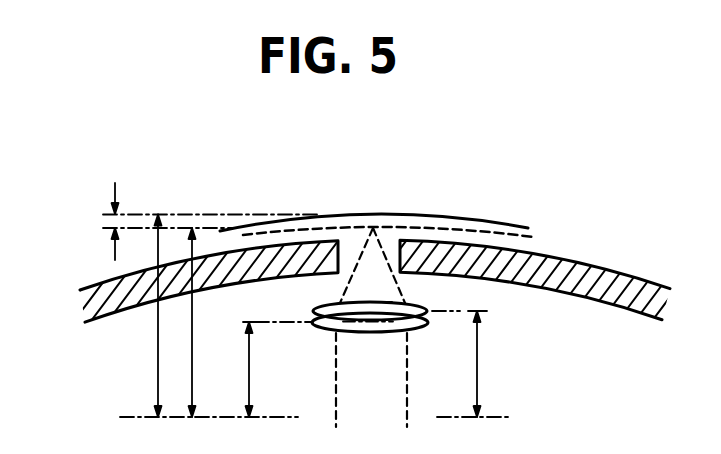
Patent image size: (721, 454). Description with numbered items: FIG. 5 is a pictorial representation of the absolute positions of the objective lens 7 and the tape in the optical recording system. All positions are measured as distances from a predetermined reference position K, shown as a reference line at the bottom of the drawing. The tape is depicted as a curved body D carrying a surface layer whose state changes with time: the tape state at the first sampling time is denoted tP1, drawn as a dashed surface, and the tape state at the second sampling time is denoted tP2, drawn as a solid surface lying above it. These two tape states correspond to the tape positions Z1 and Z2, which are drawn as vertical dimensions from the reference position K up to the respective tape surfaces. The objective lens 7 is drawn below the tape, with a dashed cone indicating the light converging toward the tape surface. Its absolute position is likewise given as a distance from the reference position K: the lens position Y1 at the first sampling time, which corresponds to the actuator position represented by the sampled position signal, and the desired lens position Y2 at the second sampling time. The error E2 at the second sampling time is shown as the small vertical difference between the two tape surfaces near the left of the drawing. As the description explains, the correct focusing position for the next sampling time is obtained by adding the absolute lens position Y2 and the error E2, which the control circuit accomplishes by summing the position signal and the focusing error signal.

The optical disk substrate D is at (627, 309).
The objective lens 7 is at (368, 333).
The tape state at time T2 tP2 is at (528, 228).
The tape state at time T1 tP1 is at (533, 237).
The error at time T2 E2 is at (112, 222).
The tape position at time T2 Z2 is at (156, 316).
The tape position at time T1 Z1 is at (196, 322).
The desired lens position at time T2 Y2 is at (269, 369).
The lens position at time T1 Y1 is at (462, 364).
The reference position K is at (298, 412).